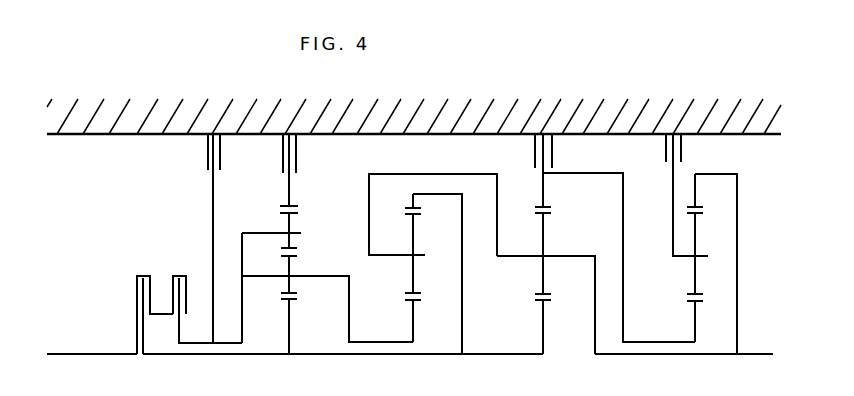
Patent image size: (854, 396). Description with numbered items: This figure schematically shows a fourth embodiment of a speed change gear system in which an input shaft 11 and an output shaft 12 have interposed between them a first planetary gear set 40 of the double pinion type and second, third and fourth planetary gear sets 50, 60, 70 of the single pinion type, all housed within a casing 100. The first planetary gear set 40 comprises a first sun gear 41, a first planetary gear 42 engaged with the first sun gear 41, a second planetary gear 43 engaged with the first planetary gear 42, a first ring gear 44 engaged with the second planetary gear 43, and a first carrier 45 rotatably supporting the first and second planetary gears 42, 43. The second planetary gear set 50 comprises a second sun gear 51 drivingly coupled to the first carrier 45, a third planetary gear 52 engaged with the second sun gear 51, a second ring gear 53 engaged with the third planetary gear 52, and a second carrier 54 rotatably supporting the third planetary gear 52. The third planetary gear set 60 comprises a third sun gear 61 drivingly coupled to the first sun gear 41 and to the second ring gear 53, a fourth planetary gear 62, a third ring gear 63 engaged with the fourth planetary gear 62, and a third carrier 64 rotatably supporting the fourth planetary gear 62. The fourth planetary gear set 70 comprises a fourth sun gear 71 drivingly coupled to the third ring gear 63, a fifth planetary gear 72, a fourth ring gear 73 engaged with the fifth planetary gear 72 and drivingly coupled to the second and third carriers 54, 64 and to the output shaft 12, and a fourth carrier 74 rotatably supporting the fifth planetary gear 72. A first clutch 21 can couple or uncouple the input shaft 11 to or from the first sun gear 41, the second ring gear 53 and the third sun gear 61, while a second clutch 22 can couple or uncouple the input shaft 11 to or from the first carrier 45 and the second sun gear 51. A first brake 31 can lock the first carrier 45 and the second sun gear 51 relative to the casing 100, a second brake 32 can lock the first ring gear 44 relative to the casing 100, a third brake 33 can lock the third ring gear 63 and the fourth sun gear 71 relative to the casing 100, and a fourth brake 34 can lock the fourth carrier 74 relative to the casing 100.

The casing 100 is at (459, 122).
The input shaft 11 is at (83, 355).
The output shaft 12 is at (645, 355).
The first clutch 21 is at (138, 273).
The second clutch 22 is at (178, 273).
The first brake 31 is at (206, 149).
The second brake 32 is at (281, 149).
The third brake 33 is at (555, 152).
The fourth brake 34 is at (684, 143).
The first planetary gear set 40 is at (327, 262).
The first sun gear 41 is at (290, 322).
The first planetary gear 42 is at (292, 285).
The second planetary gear 43 is at (292, 241).
The first ring gear 44 is at (290, 190).
The first carrier 45 is at (271, 210).
The second planetary gear set 50 is at (433, 282).
The second sun gear 51 is at (430, 321).
The third planetary gear 52 is at (414, 273).
The second ring gear 53 is at (415, 197).
The second carrier 54 is at (433, 215).
The third planetary gear set 60 is at (596, 281).
The third sun gear 61 is at (560, 366).
The fourth planetary gear 62 is at (544, 275).
The third ring gear 63 is at (544, 190).
The third carrier 64 is at (546, 292).
The fourth planetary gear set 70 is at (706, 282).
The fourth sun gear 71 is at (694, 323).
The fifth planetary gear 72 is at (694, 276).
The fourth ring gear 73 is at (697, 189).
The fourth carrier 74 is at (655, 241).